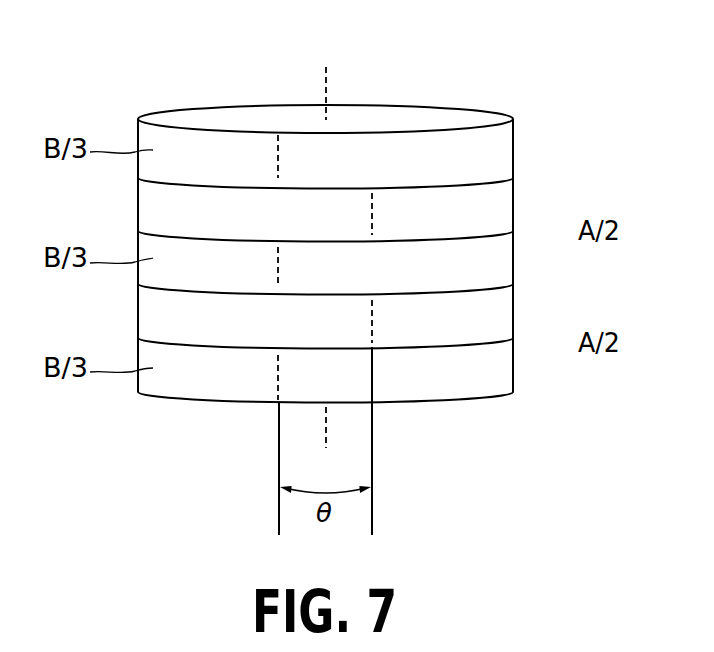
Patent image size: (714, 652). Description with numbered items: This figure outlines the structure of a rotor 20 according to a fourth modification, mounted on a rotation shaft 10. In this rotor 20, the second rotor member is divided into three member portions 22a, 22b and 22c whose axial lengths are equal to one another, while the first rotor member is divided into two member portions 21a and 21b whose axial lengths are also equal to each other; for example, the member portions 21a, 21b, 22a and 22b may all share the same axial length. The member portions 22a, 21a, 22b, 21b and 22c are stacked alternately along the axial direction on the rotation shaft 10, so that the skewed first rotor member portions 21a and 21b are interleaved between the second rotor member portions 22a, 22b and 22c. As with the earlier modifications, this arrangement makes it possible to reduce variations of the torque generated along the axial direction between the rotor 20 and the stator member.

The rotor 20 is at (223, 95).
The rotation shaft 10 is at (328, 78).
The member portion 22a is at (485, 157).
The member portion 21a is at (485, 200).
The member portion 22b is at (485, 258).
The member portion 21b is at (485, 312).
The member portion 22c is at (485, 368).